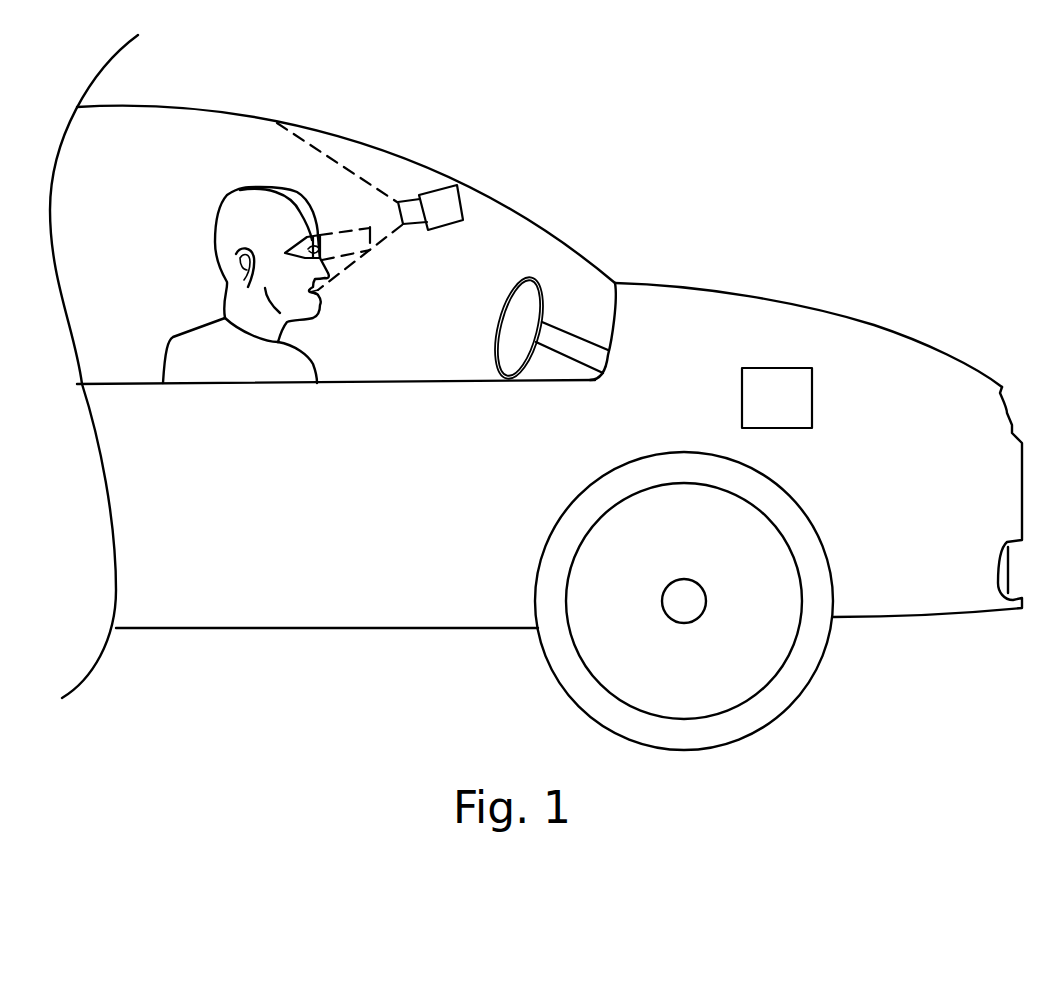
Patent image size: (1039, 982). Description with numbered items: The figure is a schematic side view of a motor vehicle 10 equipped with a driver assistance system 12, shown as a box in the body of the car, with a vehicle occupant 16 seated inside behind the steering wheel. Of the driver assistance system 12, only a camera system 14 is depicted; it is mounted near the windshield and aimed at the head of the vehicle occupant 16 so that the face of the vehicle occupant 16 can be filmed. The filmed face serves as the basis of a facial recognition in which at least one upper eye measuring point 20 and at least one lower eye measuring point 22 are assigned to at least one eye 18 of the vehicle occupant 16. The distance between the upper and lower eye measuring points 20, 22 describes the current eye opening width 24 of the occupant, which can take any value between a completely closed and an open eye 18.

The motor vehicle 10 is at (776, 297).
The driver assistance system 12 is at (812, 393).
The camera system 14 is at (458, 222).
The vehicle occupant 16 is at (313, 363).
The eye 18 is at (305, 248).
The upper eye measuring point 20 is at (310, 237).
The lower eye measuring point 22 is at (328, 283).
The eye opening width 24 is at (373, 237).